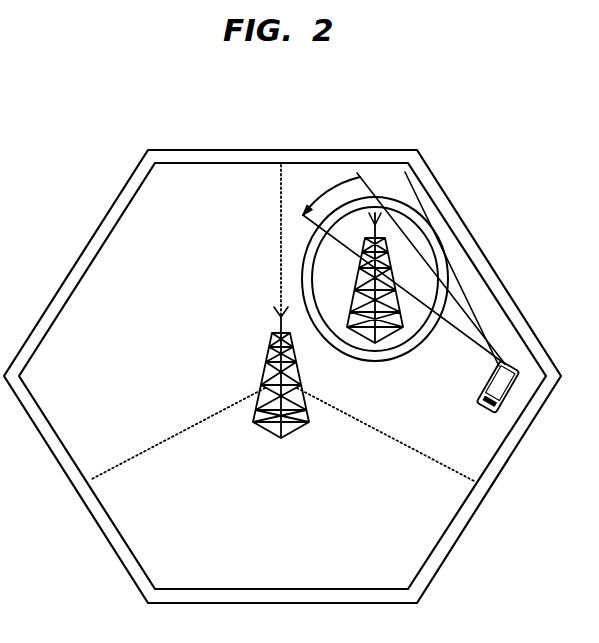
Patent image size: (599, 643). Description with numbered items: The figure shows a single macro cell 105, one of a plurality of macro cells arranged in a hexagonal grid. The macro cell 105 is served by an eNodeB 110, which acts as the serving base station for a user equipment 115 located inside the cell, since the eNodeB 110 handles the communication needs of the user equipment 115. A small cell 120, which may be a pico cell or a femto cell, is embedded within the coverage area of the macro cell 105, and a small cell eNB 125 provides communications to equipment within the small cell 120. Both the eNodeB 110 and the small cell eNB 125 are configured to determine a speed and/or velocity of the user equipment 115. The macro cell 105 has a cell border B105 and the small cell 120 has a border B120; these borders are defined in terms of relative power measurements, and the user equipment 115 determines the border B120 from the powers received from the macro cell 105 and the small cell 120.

The macro cell 105 is at (238, 150).
The eNodeB 110 is at (268, 356).
The user equipment 115 is at (479, 412).
The small cell 120 is at (436, 336).
The small cell eNB 125 is at (376, 345).
The cell border B105 is at (437, 193).
The border B120 is at (442, 255).